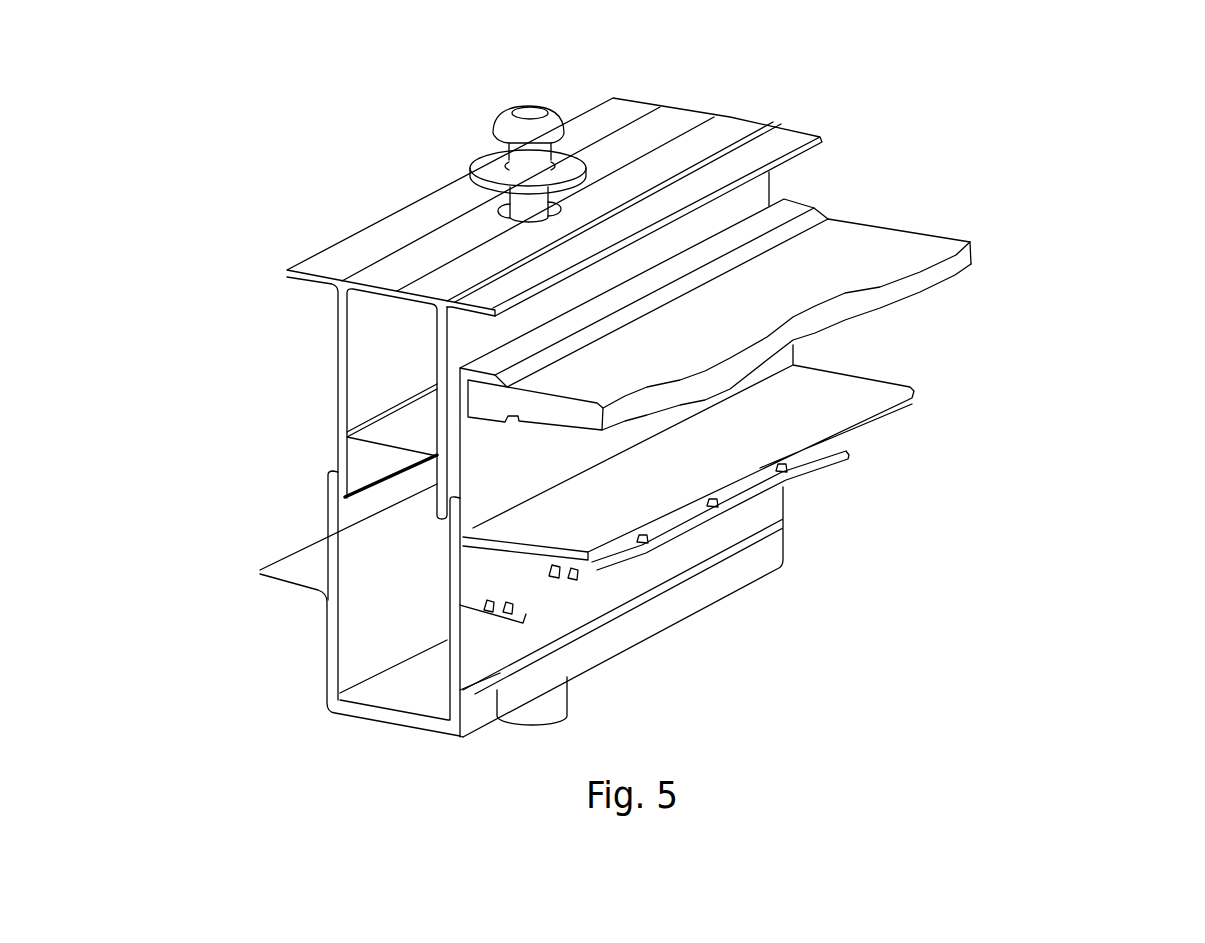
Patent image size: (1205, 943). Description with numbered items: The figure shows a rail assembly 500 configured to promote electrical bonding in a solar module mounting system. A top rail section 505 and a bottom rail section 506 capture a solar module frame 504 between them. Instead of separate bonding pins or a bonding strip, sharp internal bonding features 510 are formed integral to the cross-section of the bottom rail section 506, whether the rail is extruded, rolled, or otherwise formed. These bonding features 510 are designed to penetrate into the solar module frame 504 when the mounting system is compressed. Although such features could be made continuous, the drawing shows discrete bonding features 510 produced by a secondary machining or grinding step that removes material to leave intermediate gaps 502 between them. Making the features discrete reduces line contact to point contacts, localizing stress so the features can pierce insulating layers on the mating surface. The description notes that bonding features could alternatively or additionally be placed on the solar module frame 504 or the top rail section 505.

The rail assembly 500 is at (314, 214).
The intermediate gaps 502 is at (544, 566).
The solar module frame 504 is at (867, 389).
The top rail section 505 is at (377, 382).
The bottom rail section 506 is at (361, 640).
The sharp internal bonding features 510 is at (527, 607).